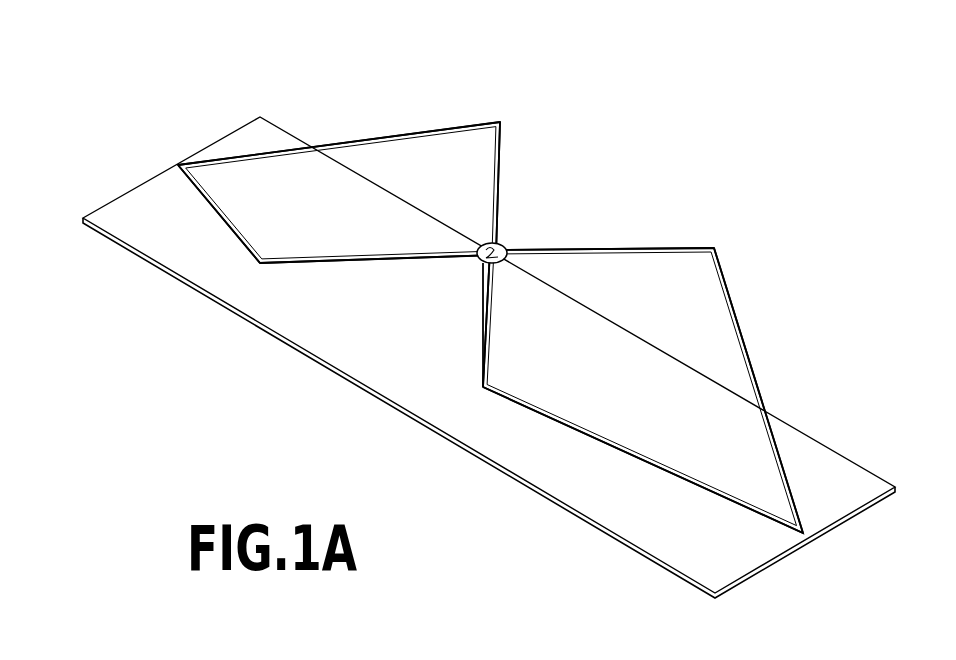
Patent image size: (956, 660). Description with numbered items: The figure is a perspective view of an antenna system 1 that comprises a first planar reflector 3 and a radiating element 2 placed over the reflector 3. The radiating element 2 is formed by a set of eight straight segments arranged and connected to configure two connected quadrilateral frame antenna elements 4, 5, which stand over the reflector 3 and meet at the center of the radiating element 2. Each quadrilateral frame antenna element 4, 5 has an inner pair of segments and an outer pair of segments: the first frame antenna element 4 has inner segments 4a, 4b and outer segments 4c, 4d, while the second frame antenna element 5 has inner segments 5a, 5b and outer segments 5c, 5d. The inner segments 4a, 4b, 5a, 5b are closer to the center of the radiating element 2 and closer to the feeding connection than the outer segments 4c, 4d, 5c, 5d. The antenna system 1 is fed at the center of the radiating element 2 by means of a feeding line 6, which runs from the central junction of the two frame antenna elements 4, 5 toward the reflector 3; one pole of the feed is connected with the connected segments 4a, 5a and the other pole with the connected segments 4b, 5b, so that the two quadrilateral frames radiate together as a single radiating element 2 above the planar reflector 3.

The antenna system 1 is at (233, 412).
The radiating element 2 is at (523, 223).
The first planar reflector 3 is at (748, 552).
The quadrilateral frame antenna element 4 is at (425, 117).
The inner segment 4a is at (503, 170).
The inner segment 4b is at (353, 262).
The outer segment 4c is at (363, 138).
The outer segment 4d is at (218, 222).
The quadrilateral frame antenna element 5 is at (747, 287).
The inner segment 5a is at (637, 248).
The inner segment 5b is at (480, 333).
The outer segment 5c is at (753, 360).
The outer segment 5d is at (638, 460).
The feeding line 6 is at (505, 262).